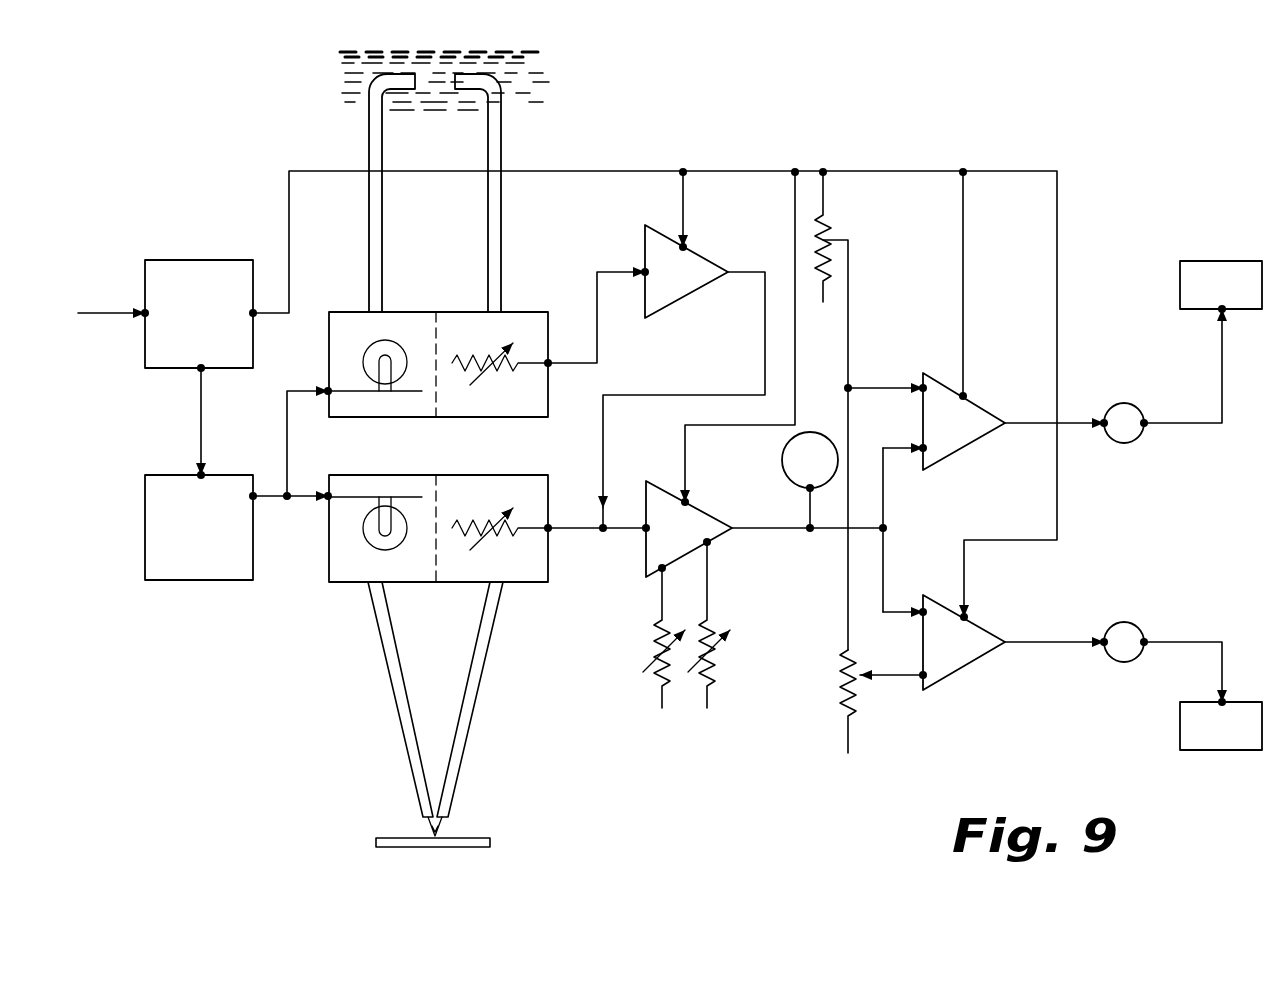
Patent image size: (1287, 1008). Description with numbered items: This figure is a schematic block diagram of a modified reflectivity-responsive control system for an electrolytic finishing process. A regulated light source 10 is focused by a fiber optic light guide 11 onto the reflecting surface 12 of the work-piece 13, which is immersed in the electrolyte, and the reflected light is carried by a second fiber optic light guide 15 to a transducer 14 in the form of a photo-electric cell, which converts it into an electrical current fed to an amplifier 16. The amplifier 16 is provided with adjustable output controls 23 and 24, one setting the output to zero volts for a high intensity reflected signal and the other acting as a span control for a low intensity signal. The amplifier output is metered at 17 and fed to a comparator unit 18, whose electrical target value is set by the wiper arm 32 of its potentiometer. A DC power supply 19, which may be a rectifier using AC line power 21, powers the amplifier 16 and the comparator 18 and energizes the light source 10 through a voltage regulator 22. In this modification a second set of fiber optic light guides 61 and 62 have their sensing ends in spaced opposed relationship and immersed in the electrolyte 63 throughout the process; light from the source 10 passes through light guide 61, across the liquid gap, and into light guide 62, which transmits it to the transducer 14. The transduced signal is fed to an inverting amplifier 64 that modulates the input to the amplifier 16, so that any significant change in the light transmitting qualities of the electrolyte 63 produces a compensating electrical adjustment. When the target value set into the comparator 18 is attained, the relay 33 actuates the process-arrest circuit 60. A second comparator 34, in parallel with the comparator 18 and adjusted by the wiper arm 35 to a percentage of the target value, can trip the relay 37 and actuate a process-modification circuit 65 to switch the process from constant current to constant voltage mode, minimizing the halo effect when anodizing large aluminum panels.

The regulated light source 10 is at (381, 394).
The fiber optic light guide 11 is at (395, 688).
The reflecting surface 12 is at (398, 836).
The work-piece 13 is at (490, 843).
The transducer 14 is at (489, 385).
The second fiber optic light guide 15 is at (472, 690).
The amplifier 16 is at (655, 548).
The meter 17 is at (795, 455).
The comparator unit 18 is at (980, 410).
The DC power supply 19 is at (205, 272).
The AC line power 21 is at (103, 308).
The voltage regulator 22 is at (190, 568).
The adjustable output control 23 is at (656, 640).
The adjustable output control 24 is at (712, 668).
The wiper arm 32 is at (838, 242).
The relay 33 is at (1118, 404).
The second comparator 34 is at (980, 628).
The wiper arm 35 is at (886, 678).
The relay 37 is at (1120, 628).
The process-arrest circuit 60 is at (1180, 278).
The fiber optic light guide 61 is at (369, 133).
The fiber optic light guide 62 is at (495, 133).
The electrolyte 63 is at (540, 78).
The inverting amplifier 64 is at (655, 248).
The process-modification circuit 65 is at (1180, 725).